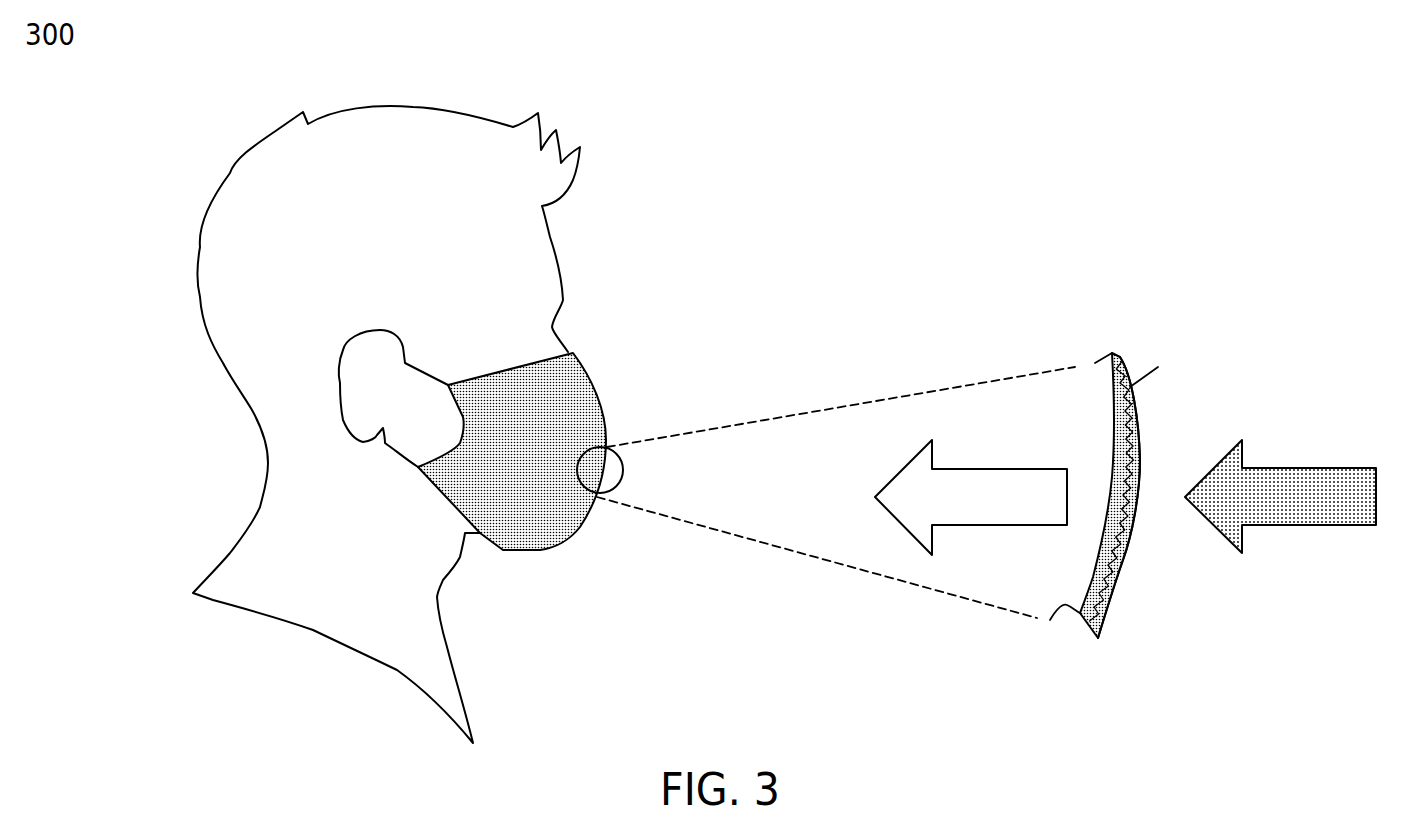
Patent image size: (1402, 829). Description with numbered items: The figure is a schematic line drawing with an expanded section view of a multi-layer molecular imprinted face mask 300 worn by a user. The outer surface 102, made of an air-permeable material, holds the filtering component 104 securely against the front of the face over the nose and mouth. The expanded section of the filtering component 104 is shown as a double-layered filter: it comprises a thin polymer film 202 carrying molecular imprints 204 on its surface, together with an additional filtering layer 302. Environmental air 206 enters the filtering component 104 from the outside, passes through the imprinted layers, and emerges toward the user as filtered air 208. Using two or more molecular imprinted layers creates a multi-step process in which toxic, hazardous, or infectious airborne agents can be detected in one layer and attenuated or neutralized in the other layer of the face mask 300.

The multi-layer molecular imprinted face mask 300 is at (597, 357).
The outer surface 102 is at (613, 410).
The filtering component 104 is at (841, 507).
The thin polymer film 202 is at (1140, 423).
The molecular imprints 204 is at (1127, 530).
The additional filtering layer 302 is at (1115, 585).
The environmental air 206 is at (1308, 458).
The filtered air 208 is at (878, 518).